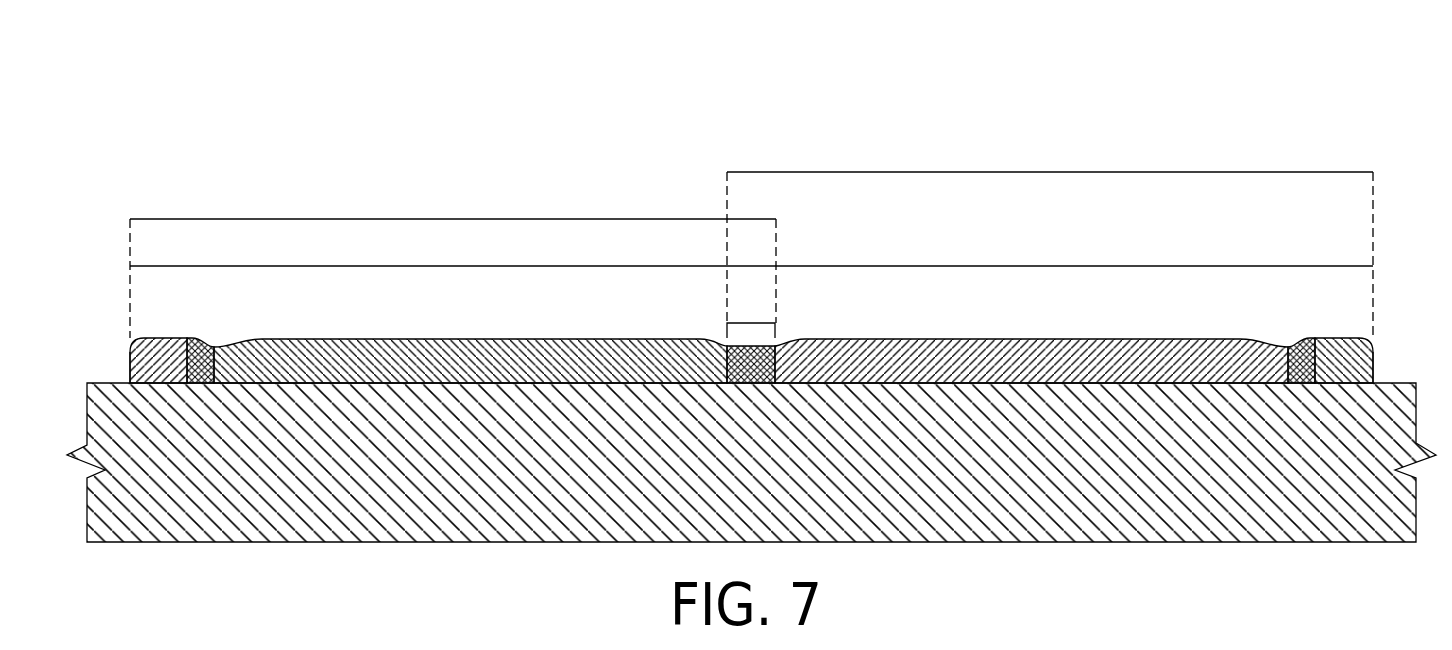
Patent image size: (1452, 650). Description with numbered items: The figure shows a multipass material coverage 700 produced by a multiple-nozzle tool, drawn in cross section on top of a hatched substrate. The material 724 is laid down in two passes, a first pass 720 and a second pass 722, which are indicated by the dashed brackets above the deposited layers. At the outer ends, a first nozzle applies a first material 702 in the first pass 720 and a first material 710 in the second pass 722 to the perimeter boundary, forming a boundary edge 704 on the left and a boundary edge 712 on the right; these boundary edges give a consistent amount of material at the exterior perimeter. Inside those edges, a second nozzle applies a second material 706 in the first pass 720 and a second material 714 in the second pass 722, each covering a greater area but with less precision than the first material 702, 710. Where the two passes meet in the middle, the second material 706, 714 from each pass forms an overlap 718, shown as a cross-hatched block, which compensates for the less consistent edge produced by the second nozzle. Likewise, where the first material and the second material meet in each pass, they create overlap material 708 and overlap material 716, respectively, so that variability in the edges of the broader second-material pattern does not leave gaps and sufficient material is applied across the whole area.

The multipass material coverage 700 is at (202, 106).
The first material 702 is at (158, 336).
The boundary edge 704 is at (124, 359).
The second material 706 is at (467, 336).
The overlap material 708 is at (205, 340).
The first material 710 is at (1347, 336).
The boundary edge 712 is at (1380, 359).
The second material 714 is at (1037, 336).
The overlap material 716 is at (1296, 340).
The overlap 718 is at (752, 323).
The first pass 720 is at (454, 219).
The second pass 722 is at (1053, 172).
The material 724 is at (911, 266).